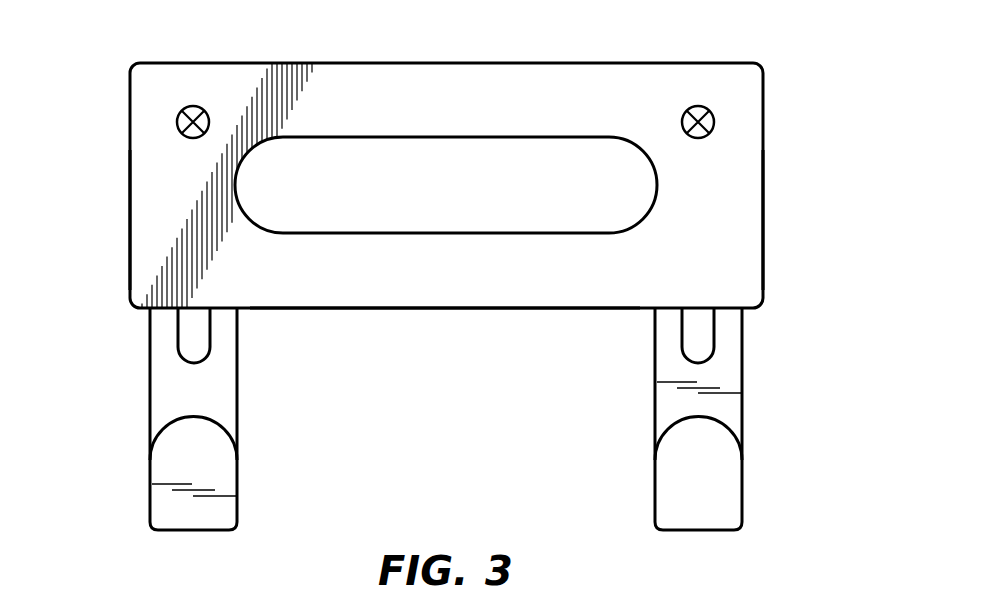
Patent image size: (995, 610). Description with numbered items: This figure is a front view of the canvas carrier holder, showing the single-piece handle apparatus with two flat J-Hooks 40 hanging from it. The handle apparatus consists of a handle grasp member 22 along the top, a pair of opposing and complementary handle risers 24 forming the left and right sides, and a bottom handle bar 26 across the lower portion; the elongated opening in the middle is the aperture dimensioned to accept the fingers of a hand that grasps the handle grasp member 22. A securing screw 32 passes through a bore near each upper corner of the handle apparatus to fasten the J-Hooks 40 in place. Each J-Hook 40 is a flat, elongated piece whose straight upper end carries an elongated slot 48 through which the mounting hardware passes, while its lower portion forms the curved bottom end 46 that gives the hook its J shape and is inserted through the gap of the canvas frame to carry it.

The handle grasp member 22 is at (502, 100).
The handle risers 24 is at (158, 195).
The bottom handle bar 26 is at (450, 276).
The securing screw 32 is at (714, 117).
The J-Hook 40 is at (730, 370).
The bottom end 46 is at (157, 502).
The elongated slot 48 is at (192, 338).